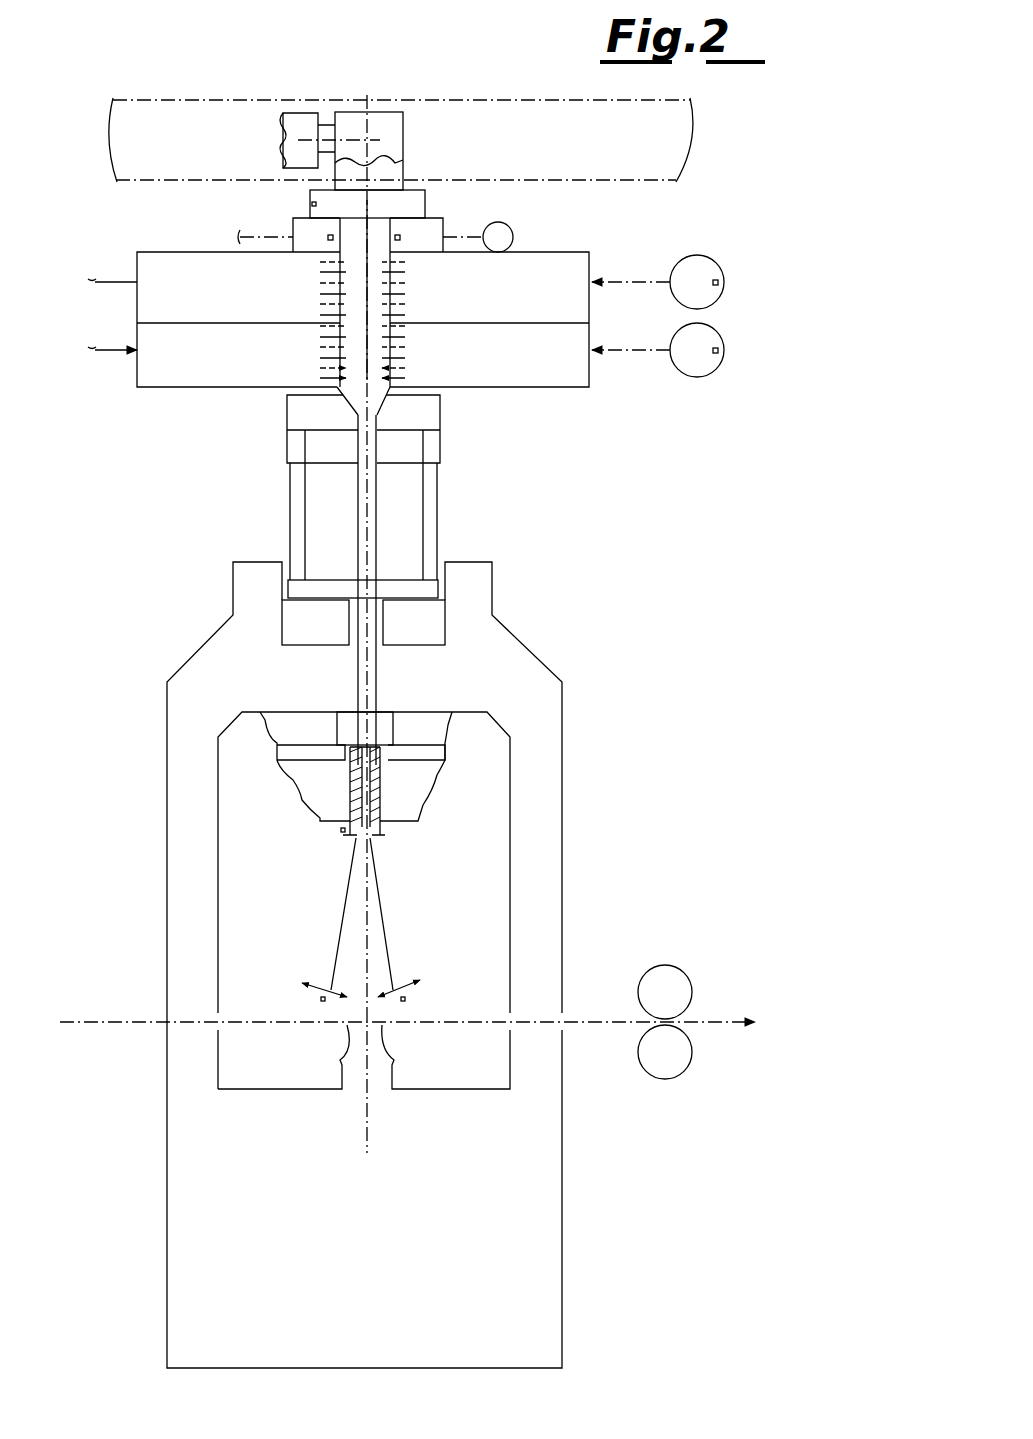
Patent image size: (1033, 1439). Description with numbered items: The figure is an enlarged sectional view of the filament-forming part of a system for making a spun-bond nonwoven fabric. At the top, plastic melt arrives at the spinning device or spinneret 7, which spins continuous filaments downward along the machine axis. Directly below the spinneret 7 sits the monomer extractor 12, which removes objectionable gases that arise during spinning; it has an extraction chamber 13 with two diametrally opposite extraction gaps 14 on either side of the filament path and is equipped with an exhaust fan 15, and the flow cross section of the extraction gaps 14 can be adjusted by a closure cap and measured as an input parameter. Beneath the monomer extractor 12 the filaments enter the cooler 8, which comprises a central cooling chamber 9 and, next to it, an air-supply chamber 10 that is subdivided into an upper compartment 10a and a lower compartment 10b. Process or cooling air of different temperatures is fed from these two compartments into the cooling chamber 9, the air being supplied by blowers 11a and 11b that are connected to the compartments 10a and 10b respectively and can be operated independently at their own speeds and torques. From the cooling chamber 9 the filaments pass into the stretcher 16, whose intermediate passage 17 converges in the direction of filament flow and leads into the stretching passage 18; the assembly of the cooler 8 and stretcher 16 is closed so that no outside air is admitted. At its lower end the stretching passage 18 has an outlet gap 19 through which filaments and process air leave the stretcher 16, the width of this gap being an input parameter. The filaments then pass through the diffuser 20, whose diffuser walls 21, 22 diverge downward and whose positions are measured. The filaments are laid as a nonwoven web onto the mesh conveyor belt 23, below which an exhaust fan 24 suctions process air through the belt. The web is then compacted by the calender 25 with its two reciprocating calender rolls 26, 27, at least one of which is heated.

The spinneret 7 is at (418, 135).
The cooler 8 is at (578, 398).
The cooling chamber 9 is at (360, 320).
The air-supply chamber 10 is at (593, 254).
The upper compartment 10a is at (582, 308).
The lower compartment 10b is at (586, 374).
The blower 11a is at (708, 258).
The blower 11b is at (708, 328).
The monomer extractor 12 is at (448, 210).
The extraction chamber 13 is at (432, 228).
The extraction gap 14 is at (330, 246).
The exhaust fan 15 is at (511, 228).
The stretcher 16 is at (277, 487).
The intermediate passage 17 is at (377, 507).
The stretching passage 18 is at (385, 757).
The outlet gap 19 is at (357, 838).
The diffuser 20 is at (392, 880).
The diffuser wall 21 is at (337, 938).
The diffuser wall 22 is at (395, 938).
The mesh conveyor belt 23 is at (587, 1022).
The exhaust fan 24 is at (370, 1087).
The calender 25 is at (708, 991).
The calender roll 26 is at (687, 987).
The calender roll 27 is at (683, 1065).